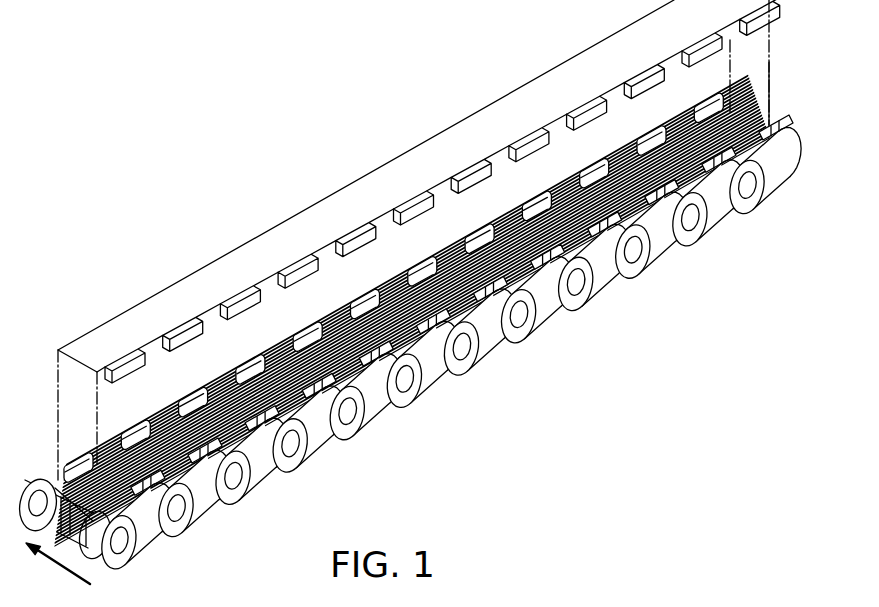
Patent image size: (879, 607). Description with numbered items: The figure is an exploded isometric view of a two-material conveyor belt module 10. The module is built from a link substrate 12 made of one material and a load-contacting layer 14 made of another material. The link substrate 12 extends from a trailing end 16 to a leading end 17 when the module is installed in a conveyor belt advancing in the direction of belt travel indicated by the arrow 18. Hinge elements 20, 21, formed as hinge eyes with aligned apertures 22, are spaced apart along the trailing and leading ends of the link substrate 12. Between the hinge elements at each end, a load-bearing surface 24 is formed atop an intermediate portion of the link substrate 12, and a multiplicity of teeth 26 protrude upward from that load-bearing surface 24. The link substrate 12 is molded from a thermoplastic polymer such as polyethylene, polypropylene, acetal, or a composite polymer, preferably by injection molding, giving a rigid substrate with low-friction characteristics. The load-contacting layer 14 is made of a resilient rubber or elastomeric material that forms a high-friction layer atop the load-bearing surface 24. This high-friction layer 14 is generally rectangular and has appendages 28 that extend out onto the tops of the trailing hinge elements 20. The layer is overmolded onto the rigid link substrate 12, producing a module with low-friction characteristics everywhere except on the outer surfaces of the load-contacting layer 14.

The conveyor belt module 10 is at (249, 82).
The link substrate 12 is at (80, 548).
The load-contacting layer 14 is at (287, 232).
The trailing end 16 is at (206, 497).
The leading end 17 is at (209, 397).
The arrow 18 is at (56, 570).
The hinge elements 20 is at (302, 462).
The hinge elements 21 is at (300, 342).
The apertures 22 is at (470, 251).
The load-bearing surface 24 is at (412, 402).
The teeth 26 is at (657, 218).
The appendages 28 is at (699, 54).